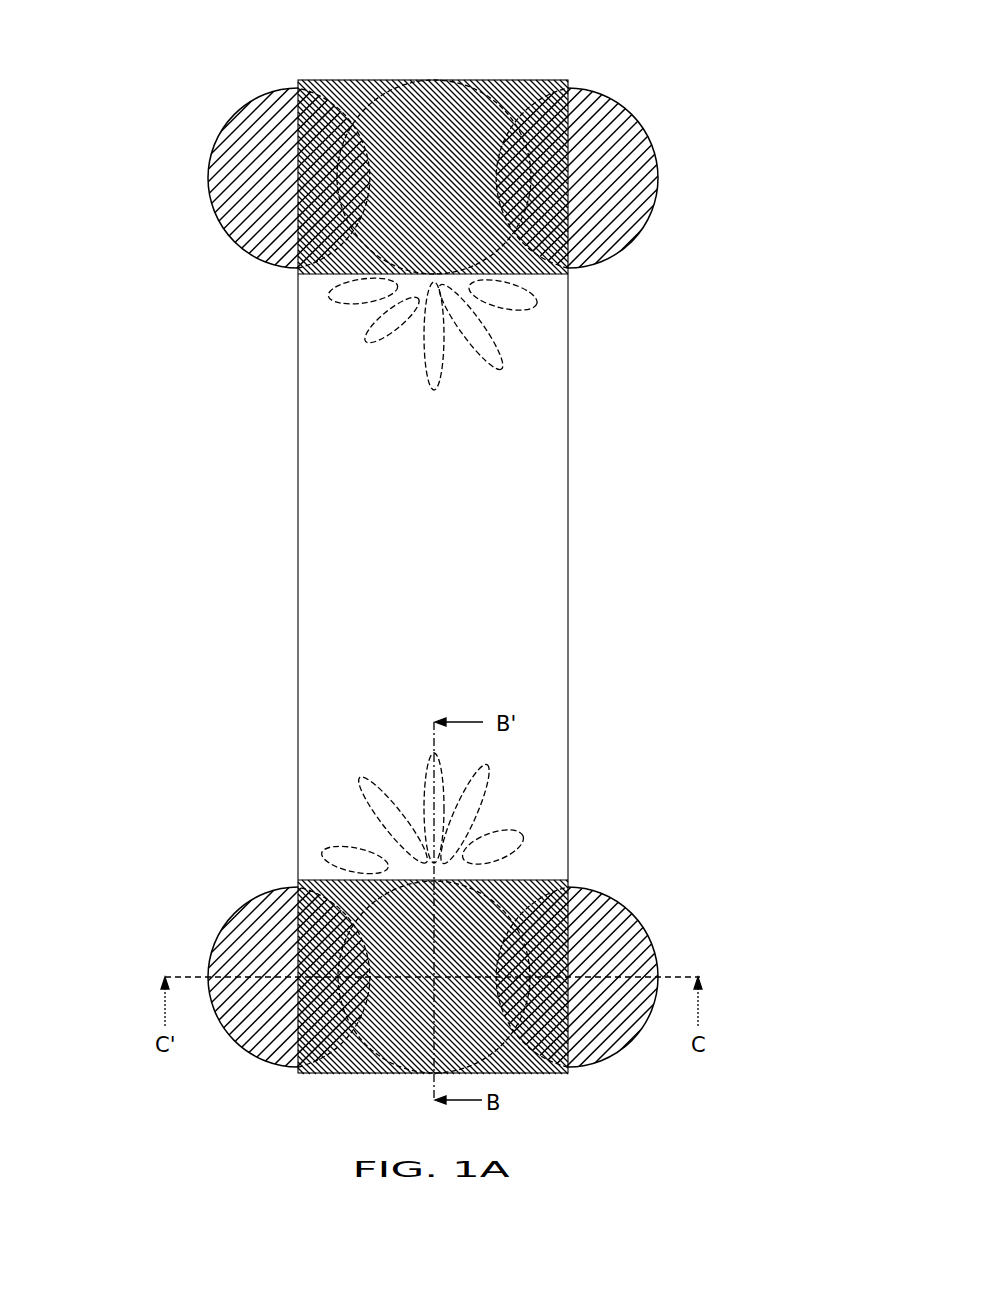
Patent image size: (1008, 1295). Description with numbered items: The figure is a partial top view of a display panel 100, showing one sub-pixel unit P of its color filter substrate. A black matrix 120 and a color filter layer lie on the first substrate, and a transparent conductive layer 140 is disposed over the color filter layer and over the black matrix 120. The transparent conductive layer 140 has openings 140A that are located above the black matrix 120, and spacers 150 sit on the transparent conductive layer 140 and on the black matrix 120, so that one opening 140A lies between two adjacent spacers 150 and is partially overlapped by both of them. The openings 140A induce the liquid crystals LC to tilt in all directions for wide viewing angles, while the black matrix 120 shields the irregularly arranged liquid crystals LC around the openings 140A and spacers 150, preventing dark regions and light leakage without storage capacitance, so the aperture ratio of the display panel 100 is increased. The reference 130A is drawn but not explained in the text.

The display panel 100 is at (80, 19).
The black matrix 120 is at (520, 90).
The first surface of substrate 130A is at (548, 559).
The transparent conductive layer 140 is at (568, 476).
The opening 140A is at (433, 121).
The spacer 150 is at (282, 112).
The liquid crystals LC is at (520, 828).
The sub-pixel unit P is at (682, 63).